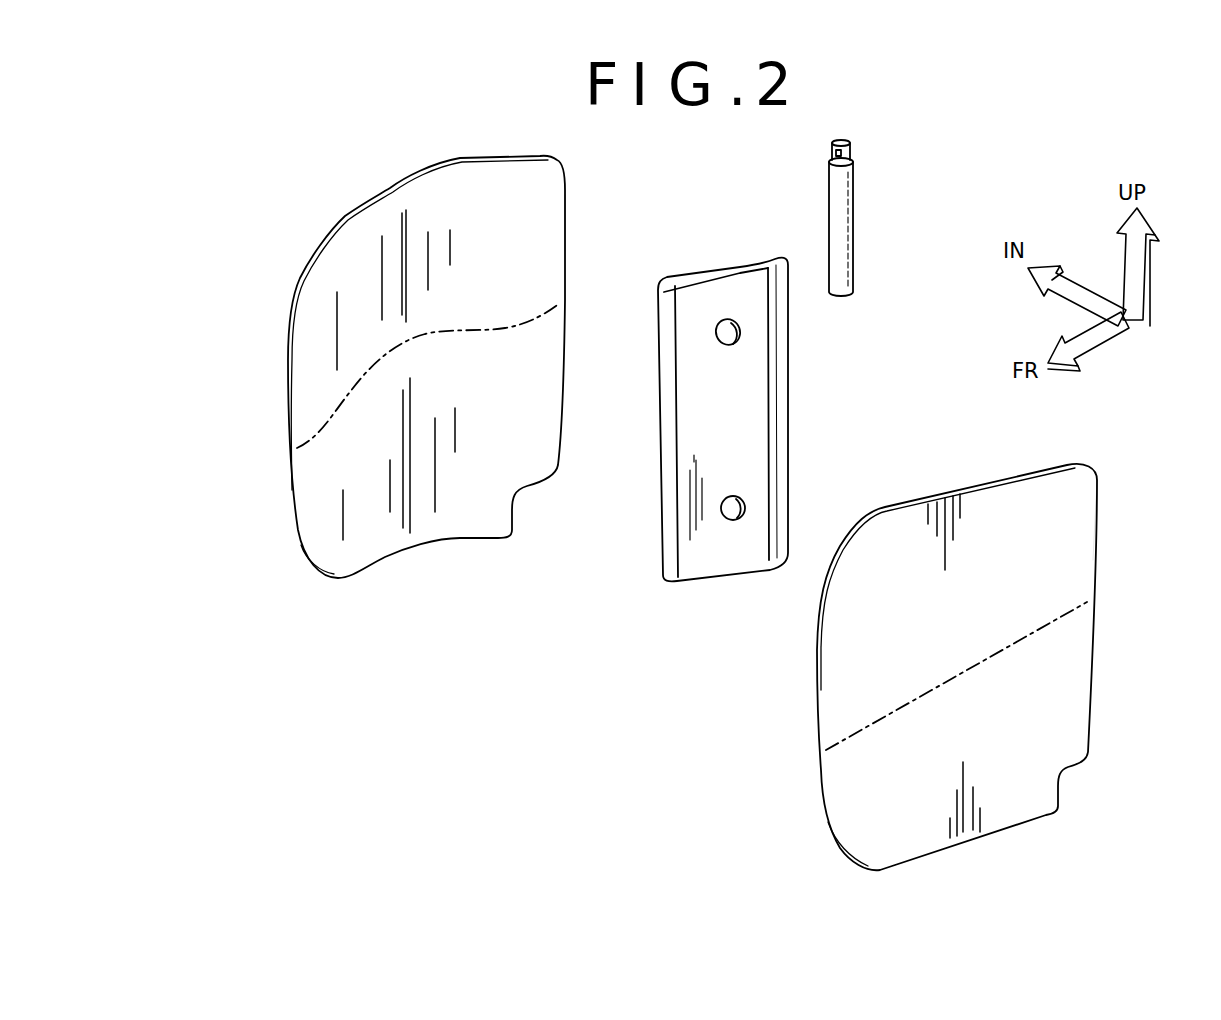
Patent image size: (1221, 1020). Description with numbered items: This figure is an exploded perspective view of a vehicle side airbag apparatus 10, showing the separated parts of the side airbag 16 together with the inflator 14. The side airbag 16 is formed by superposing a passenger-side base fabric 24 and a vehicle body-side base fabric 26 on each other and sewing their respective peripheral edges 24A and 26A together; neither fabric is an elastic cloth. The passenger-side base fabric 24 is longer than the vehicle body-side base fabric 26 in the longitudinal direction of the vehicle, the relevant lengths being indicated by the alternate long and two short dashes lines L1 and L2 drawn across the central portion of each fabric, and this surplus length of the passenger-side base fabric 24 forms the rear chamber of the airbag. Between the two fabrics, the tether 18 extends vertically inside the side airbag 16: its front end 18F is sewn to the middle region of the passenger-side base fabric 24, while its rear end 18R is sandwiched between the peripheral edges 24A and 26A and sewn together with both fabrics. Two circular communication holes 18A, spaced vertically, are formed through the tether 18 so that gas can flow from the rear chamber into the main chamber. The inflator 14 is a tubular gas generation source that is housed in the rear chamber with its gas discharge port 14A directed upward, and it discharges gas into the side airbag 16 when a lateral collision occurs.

The vehicle seat 10 is at (218, 200).
The side airbag 16 is at (287, 258).
The passenger-side base fabric 24 is at (345, 218).
The peripheral edge 24A is at (565, 252).
The alternate long and two short dashes line L1 is at (465, 332).
The tether 18 is at (714, 267).
The communication hole 18A is at (731, 345).
The front end 18F is at (658, 402).
The rear end 18R is at (795, 399).
The inflator 14 is at (855, 250).
The gas discharge port 14A is at (850, 147).
The vehicle body-side base fabric 26 is at (882, 504).
The peripheral edge 26A is at (1093, 556).
The alternate long and two short dashes line L2 is at (918, 694).